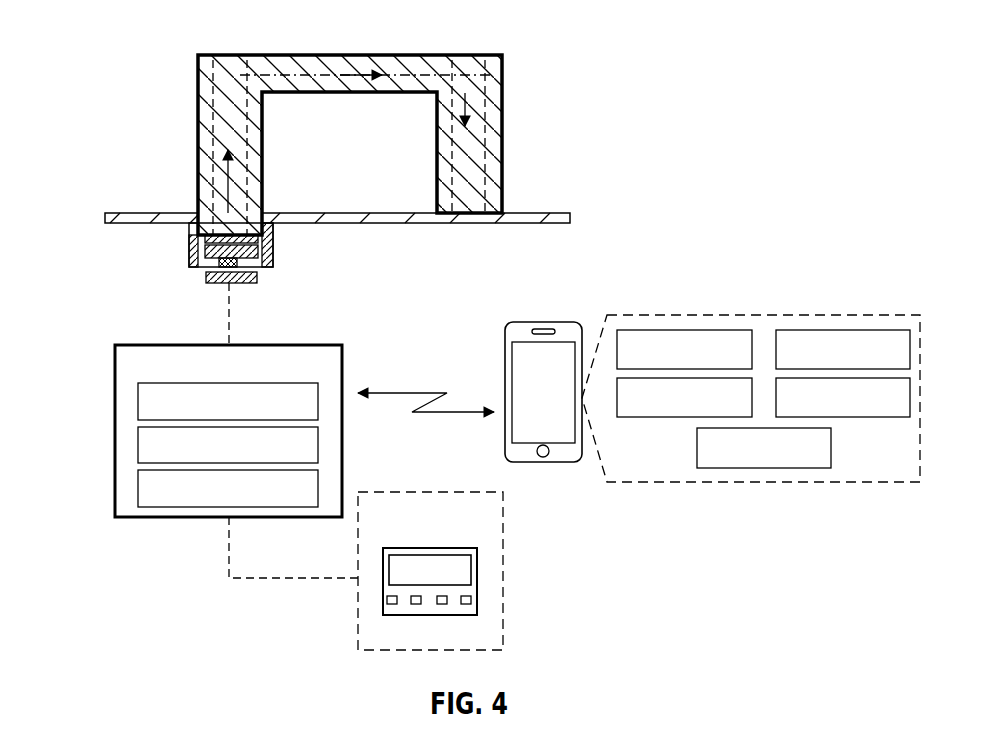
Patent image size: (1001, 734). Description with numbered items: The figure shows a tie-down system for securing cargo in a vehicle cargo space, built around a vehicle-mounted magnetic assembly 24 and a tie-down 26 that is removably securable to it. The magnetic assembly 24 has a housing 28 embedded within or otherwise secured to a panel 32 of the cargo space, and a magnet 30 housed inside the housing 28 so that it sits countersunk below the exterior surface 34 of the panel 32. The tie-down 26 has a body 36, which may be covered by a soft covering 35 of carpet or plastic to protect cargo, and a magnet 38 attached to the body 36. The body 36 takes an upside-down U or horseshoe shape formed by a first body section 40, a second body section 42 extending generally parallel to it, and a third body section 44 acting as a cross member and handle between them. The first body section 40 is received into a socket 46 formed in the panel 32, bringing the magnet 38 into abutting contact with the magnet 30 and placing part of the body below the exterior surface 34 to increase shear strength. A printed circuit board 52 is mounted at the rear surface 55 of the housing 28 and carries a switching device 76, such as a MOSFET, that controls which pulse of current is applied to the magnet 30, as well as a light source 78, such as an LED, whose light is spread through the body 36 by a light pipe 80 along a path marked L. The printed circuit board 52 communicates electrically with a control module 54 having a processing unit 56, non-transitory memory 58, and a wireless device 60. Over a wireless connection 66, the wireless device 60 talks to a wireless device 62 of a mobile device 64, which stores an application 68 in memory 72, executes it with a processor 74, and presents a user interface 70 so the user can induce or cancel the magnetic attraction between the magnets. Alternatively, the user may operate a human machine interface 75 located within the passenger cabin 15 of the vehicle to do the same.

The passenger cabin 15 is at (504, 578).
The vehicle-mounted magnetic assembly 24 is at (178, 259).
The tie-down 26 is at (194, 91).
The housing 28 is at (274, 249).
The magnet 30 is at (259, 259).
The panel 32 is at (500, 32).
The exterior surface 34 is at (120, 213).
The covering 35 is at (503, 160).
The body 36 is at (486, 78).
The magnet 38 is at (265, 212).
The first body section 40 is at (204, 130).
The second body section 42 is at (488, 123).
The third body section 44 is at (316, 79).
The socket 46 is at (197, 221).
The printed circuit board 52 is at (246, 284).
The control module 54 is at (114, 366).
The rear surface 55 is at (201, 268).
The processing unit 56 is at (137, 401).
The non-transitory memory 58 is at (137, 444).
The wireless device 60 is at (137, 487).
The wireless device 62 is at (690, 329).
The mobile device 64 is at (550, 314).
The wireless connection 66 is at (421, 392).
The application 68 is at (840, 329).
The user interface 70 is at (681, 418).
The memory 72 is at (858, 418).
The processor 74 is at (790, 469).
The human machine interface 75 is at (430, 534).
The switching device 76 is at (216, 284).
The light source 78 is at (204, 243).
The light pipe 80 is at (266, 69).
The light path L is at (210, 153).